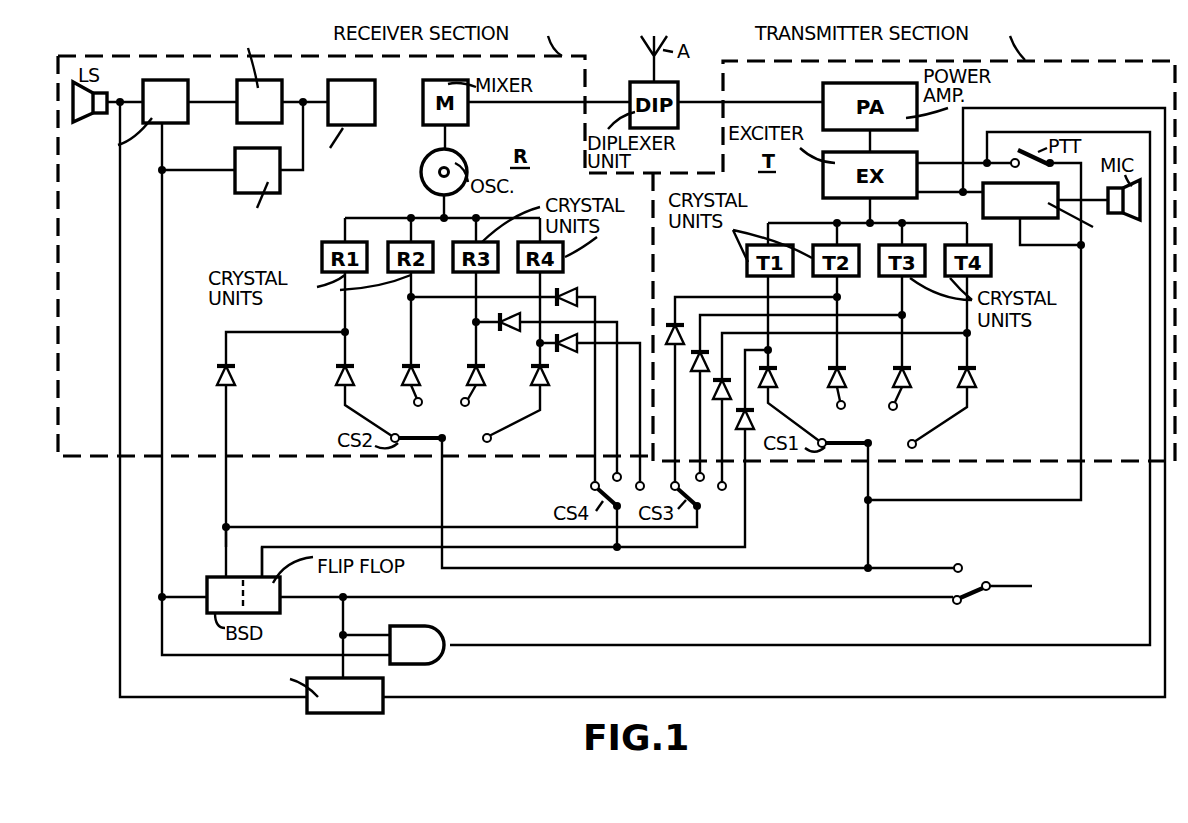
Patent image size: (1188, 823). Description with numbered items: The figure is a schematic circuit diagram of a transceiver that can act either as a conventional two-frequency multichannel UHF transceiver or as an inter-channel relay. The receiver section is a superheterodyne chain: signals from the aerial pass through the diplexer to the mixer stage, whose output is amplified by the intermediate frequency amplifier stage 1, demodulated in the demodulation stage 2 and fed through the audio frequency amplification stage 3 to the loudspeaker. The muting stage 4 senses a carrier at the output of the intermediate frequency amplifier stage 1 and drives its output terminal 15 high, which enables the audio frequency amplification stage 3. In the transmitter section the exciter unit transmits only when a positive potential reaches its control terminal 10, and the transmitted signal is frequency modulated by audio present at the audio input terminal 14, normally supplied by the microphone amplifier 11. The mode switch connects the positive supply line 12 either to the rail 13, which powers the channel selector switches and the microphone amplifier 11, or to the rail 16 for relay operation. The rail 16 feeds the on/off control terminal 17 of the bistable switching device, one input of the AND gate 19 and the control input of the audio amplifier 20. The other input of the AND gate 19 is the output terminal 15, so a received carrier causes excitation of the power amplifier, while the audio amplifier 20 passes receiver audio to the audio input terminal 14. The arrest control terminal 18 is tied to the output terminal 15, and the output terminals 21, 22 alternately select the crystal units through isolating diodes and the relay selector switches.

The intermediate frequency amplifier stage 1 is at (376, 93).
The demodulation stage 2 is at (282, 93).
The audio frequency amplification stage 3 is at (188, 95).
The muting stage 4 is at (235, 158).
The control terminal 10 is at (944, 162).
The microphone amplifier 11 is at (1043, 218).
The positive supply line 12 is at (994, 585).
The rail 13 is at (767, 568).
The audio input terminal 14 is at (947, 186).
The output terminal 15 is at (162, 170).
The rail 16 is at (763, 598).
The on/off control terminal 17 is at (297, 604).
The arrest control terminal 18 is at (178, 604).
The AND gate 19 is at (445, 626).
The audio amplifier 20 is at (385, 688).
The output terminal 21 is at (231, 540).
The output terminal 22 is at (267, 540).